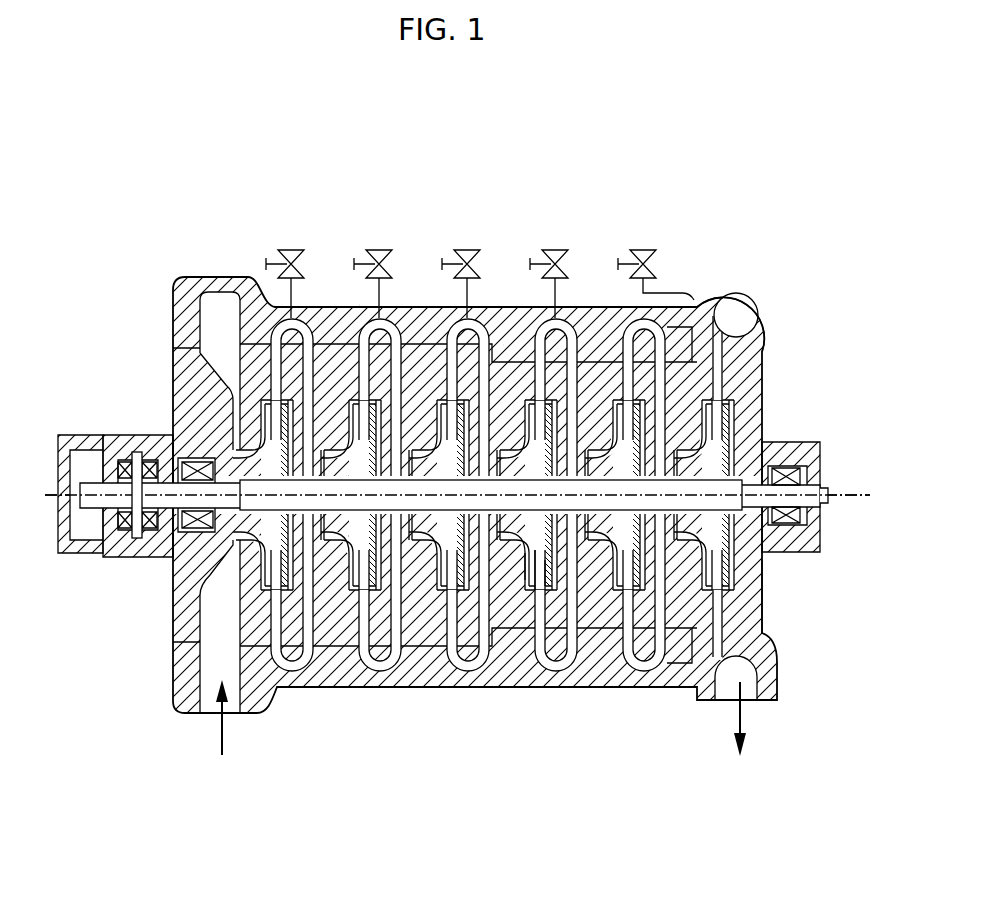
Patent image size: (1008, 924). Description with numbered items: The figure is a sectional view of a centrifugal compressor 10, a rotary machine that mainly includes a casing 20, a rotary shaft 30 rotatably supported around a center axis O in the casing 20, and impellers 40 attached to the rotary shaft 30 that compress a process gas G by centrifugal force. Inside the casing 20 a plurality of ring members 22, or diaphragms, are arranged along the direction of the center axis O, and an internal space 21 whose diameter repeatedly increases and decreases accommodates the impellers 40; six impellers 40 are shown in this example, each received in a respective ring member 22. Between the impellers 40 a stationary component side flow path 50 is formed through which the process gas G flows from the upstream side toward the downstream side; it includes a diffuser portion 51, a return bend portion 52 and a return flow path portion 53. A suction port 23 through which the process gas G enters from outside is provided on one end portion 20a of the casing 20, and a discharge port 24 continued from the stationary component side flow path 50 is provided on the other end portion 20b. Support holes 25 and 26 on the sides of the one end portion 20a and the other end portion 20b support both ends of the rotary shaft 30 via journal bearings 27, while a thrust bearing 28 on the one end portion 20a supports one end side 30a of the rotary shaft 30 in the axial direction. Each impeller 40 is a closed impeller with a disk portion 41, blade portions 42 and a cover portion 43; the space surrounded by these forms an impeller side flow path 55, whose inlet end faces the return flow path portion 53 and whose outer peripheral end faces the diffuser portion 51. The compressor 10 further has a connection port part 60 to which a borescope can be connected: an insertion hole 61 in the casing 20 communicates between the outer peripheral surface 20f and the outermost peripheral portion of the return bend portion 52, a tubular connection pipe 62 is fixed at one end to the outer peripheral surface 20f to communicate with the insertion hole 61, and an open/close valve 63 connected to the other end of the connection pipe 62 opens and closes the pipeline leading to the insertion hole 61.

The centrifugal compressor 10 is at (607, 252).
The casing 20 is at (578, 308).
The one end portion 20a is at (173, 660).
The other end portion 20b is at (763, 633).
The outer peripheral surface 20f is at (683, 305).
The internal space 21 is at (359, 305).
The ring members 22 is at (265, 689).
The suction port 23 is at (210, 700).
The discharge port 24 is at (750, 700).
The support hole 25 is at (163, 523).
The support hole 26 is at (808, 508).
The journal bearings 27 is at (197, 462).
The thrust bearing 28 is at (128, 462).
The rotary shaft 30 is at (762, 512).
The one end side of the rotary shaft 30a is at (98, 503).
The impellers 40 is at (342, 645).
The disk portion 41 is at (538, 548).
The blade portions 42 is at (540, 600).
The cover portion 43 is at (526, 563).
The stationary component side flow path 50 is at (310, 330).
The diffuser portion 51 is at (447, 363).
The return bend portion 52 is at (466, 330).
The return flow path portion 53 is at (503, 345).
The impeller side flow path 55 is at (258, 300).
The connection port part 60 is at (291, 250).
The insertion hole 61 is at (753, 281).
The connection pipe 62 is at (668, 293).
The open/close valve 63 is at (658, 280).
The center axis O is at (842, 497).
The process gas G is at (224, 733).